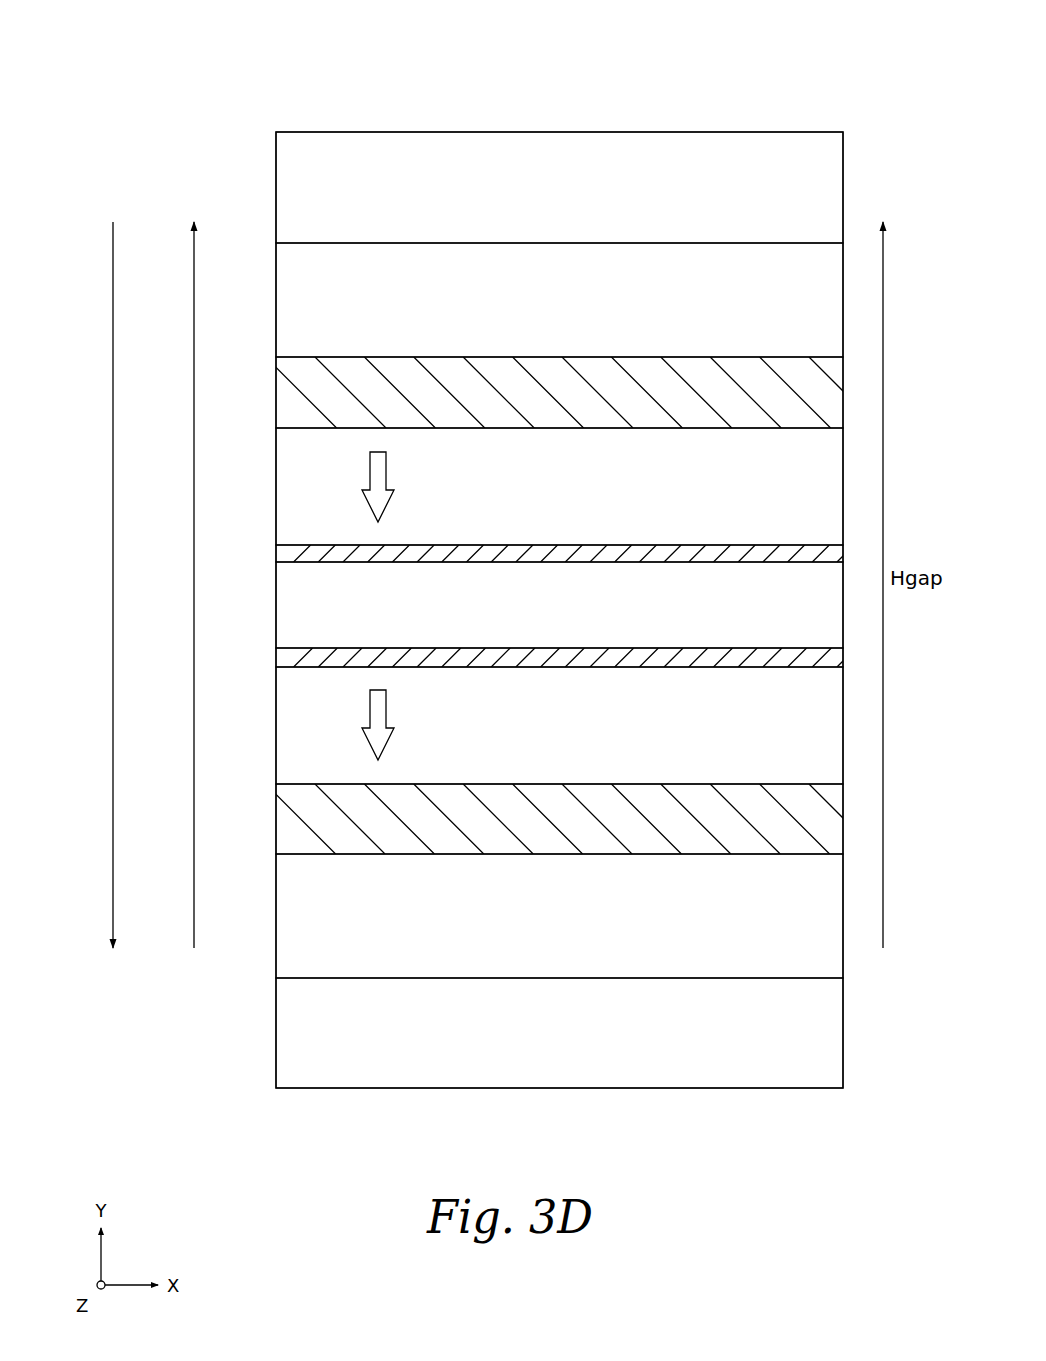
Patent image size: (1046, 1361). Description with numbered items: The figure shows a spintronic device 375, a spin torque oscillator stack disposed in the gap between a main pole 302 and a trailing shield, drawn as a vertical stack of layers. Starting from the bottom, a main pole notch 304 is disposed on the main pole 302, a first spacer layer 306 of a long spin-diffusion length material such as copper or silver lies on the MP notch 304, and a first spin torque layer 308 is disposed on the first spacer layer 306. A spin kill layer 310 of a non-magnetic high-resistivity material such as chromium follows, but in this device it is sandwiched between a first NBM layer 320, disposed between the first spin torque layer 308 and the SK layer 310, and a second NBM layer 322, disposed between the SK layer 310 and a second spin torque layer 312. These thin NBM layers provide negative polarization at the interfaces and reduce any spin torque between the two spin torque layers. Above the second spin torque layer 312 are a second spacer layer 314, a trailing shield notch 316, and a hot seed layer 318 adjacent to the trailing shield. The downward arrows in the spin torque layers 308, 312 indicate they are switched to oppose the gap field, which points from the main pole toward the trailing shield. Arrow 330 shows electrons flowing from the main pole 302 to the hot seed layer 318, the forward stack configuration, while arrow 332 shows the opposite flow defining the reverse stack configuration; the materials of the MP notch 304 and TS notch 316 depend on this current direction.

The main pole 302 is at (539, 1043).
The main pole notch 304 is at (539, 930).
The first spacer layer 306 is at (539, 837).
The first spin torque layer 308 is at (539, 740).
The spin kill layer 310 is at (539, 620).
The second spin torque layer 312 is at (539, 497).
The second spacer layer 314 is at (539, 408).
The trailing shield notch 316 is at (539, 318).
The hot seed layer 318 is at (539, 195).
The first NBM layer 320 is at (282, 657).
The second NBM layer 322 is at (282, 553).
The arrow 330 is at (193, 392).
The arrow 332 is at (112, 392).
The spintronic device 375 is at (163, 37).